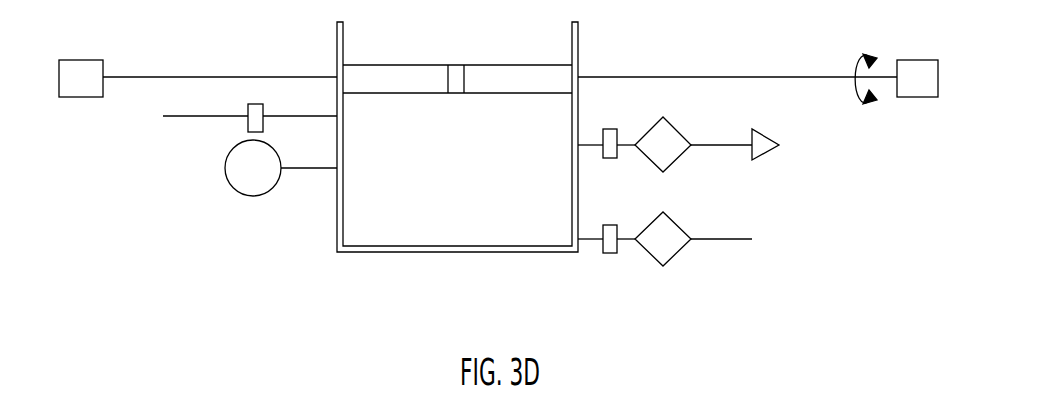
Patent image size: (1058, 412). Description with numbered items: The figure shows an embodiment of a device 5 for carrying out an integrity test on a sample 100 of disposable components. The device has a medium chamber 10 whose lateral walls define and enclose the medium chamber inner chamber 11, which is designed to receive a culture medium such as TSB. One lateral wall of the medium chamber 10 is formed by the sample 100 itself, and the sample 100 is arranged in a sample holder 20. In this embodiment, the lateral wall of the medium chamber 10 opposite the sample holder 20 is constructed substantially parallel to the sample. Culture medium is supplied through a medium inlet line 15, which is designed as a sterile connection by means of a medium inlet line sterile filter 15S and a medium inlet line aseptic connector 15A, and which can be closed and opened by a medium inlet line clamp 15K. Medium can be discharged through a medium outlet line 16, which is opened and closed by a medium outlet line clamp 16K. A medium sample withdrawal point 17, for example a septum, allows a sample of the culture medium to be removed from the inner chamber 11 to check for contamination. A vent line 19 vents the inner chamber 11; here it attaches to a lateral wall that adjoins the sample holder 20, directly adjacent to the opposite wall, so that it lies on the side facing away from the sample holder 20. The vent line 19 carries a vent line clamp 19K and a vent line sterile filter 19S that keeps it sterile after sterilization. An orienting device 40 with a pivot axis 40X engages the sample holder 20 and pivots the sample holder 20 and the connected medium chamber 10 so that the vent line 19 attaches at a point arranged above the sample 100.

The device 5 is at (847, 300).
The medium chamber 10 is at (408, 252).
The medium chamber inner chamber 11 is at (468, 166).
The medium inlet line 15 is at (723, 145).
The medium inlet line aseptic connector 15A is at (779, 135).
The medium inlet line clamp 15K is at (609, 163).
The medium inlet line sterile filter 15S is at (673, 136).
The medium outlet line 16 is at (207, 116).
The medium outlet line clamp 16K is at (275, 108).
The medium sample withdrawal point 17 is at (258, 196).
The vent line 19 is at (723, 239).
The vent line clamp 19K is at (609, 258).
The vent line sterile filter 19S is at (673, 230).
The sample holder 20 is at (336, 73).
The orienting device 40 is at (929, 93).
The pivot axis 40X is at (812, 77).
The sample 100 is at (580, 71).